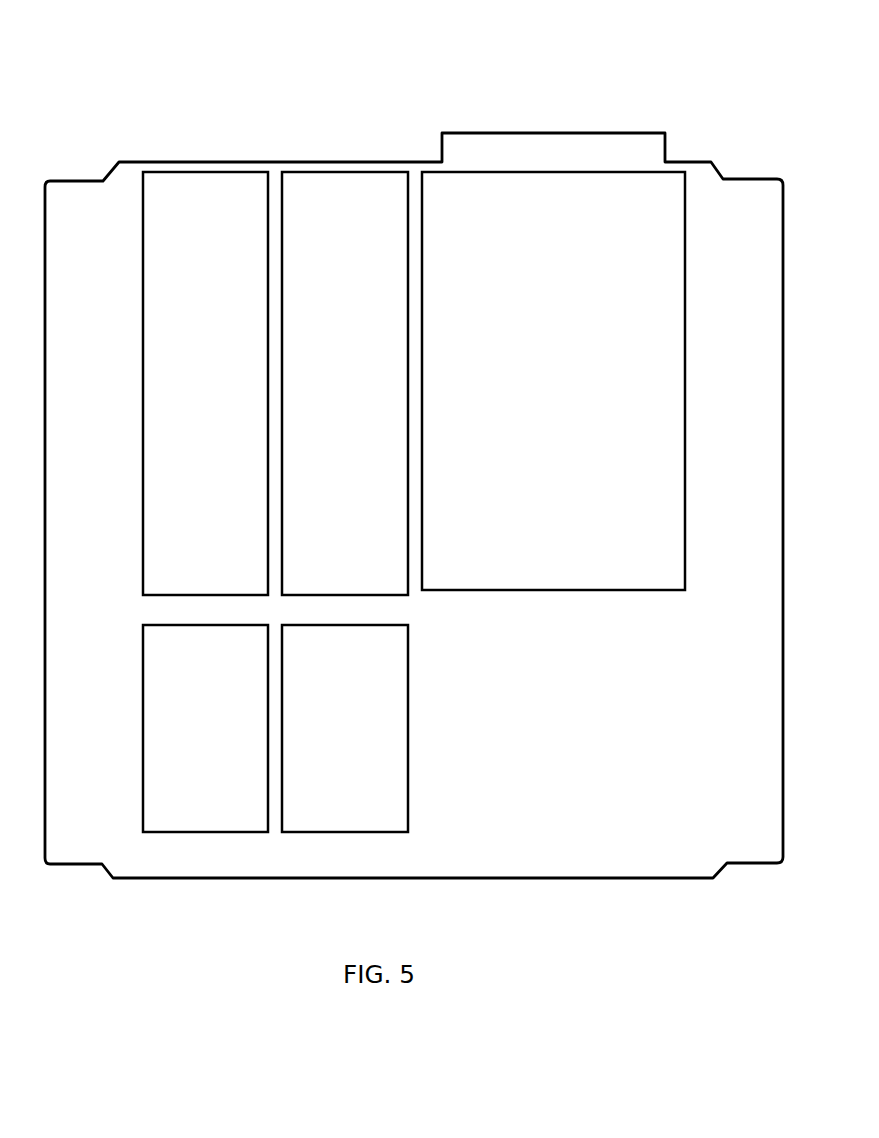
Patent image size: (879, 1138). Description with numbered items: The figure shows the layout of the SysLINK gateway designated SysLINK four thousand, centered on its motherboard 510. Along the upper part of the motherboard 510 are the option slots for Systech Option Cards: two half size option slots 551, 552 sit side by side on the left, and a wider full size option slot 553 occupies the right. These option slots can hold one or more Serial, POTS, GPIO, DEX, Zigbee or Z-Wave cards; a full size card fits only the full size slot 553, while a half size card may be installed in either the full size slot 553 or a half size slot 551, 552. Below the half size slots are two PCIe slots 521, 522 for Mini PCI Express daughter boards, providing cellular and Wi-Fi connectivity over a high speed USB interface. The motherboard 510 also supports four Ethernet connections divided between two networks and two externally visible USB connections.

The motherboard 510 is at (706, 197).
The half size option slot 551 is at (205, 190).
The half size option slot 552 is at (337, 183).
The full size option slot 553 is at (557, 237).
The PCIe slot 521 is at (220, 813).
The PCIe slot 522 is at (367, 815).